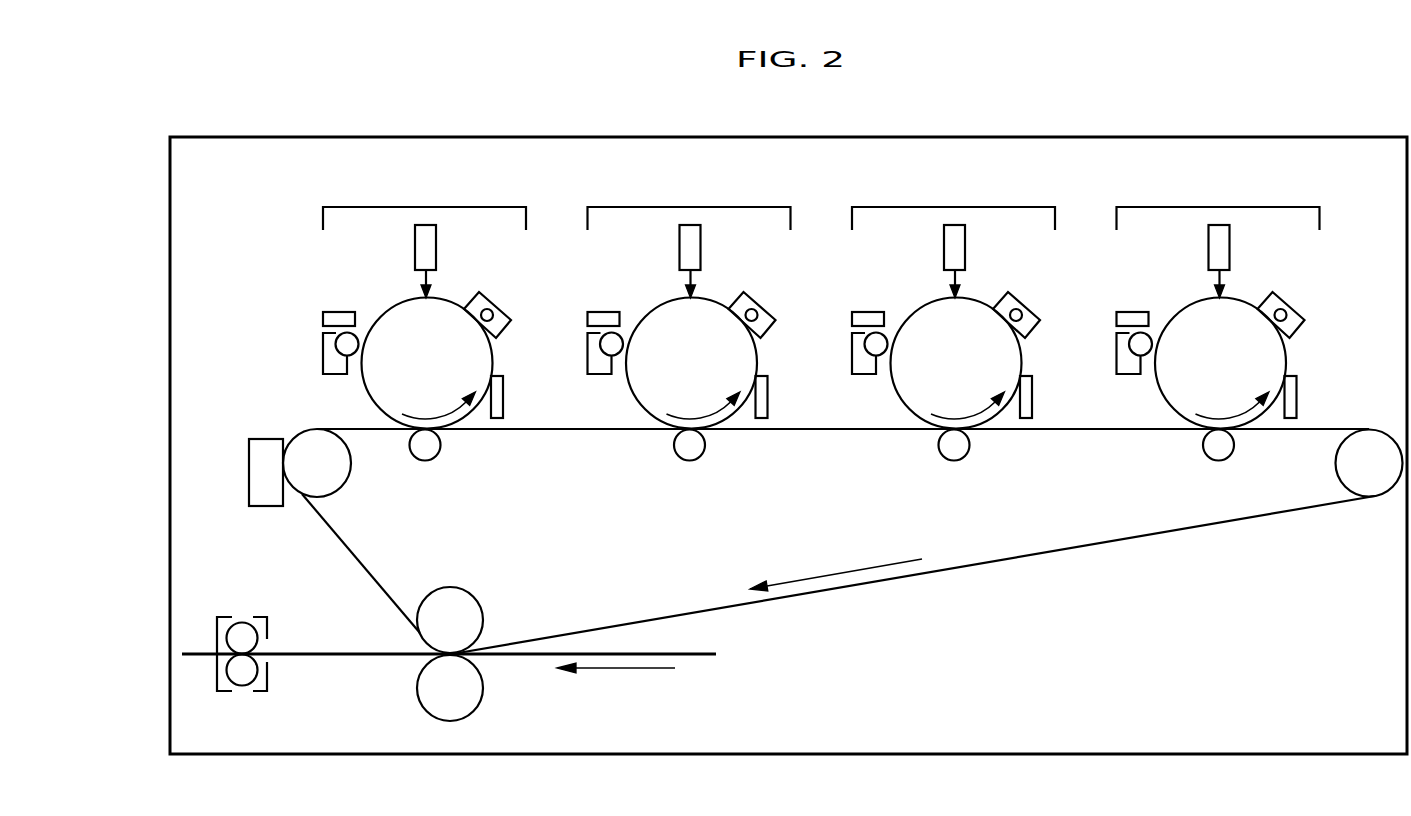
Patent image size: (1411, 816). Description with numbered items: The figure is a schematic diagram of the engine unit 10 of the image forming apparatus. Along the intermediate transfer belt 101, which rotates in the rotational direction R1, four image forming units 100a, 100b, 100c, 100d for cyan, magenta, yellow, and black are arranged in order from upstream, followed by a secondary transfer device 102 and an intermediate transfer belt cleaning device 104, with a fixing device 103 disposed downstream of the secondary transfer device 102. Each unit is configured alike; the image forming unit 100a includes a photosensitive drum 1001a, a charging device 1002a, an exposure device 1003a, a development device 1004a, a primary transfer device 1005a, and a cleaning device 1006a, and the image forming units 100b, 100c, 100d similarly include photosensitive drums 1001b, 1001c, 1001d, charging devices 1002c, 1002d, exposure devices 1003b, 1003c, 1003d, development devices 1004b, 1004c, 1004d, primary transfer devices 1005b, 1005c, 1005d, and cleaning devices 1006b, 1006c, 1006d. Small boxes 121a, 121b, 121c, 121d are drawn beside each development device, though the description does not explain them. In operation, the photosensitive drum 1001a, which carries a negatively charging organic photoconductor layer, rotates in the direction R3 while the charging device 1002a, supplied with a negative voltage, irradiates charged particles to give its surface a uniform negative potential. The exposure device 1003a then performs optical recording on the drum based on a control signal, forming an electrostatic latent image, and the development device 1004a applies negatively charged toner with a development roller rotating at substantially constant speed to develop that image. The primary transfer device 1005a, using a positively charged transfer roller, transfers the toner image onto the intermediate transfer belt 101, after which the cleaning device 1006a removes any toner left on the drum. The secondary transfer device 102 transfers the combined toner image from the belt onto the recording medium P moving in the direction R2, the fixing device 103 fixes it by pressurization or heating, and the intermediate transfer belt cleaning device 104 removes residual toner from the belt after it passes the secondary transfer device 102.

The engine unit 10 is at (211, 136).
The image forming unit 100a is at (420, 206).
The image forming unit 100b is at (663, 337).
The image forming unit 100c is at (927, 337).
The image forming unit 100d is at (1192, 337).
The photosensitive drum 1001a is at (368, 403).
The photosensitive drum 1001b is at (651, 363).
The photosensitive drum 1001c is at (915, 363).
The photosensitive drum 1001d is at (1180, 363).
The charging device 1002a is at (510, 283).
The charging device 1002c is at (1032, 298).
The charging device 1002d is at (1297, 298).
The exposure device 1003a is at (413, 254).
The exposure device 1003b is at (647, 261).
The exposure device 1003c is at (911, 261).
The exposure device 1003d is at (1176, 261).
The development device 1004a is at (322, 364).
The development device 1004b is at (571, 351).
The development device 1004c is at (835, 351).
The development device 1004d is at (1100, 351).
The primary transfer device 1005a is at (425, 462).
The primary transfer device 1005b is at (695, 471).
The primary transfer device 1005c is at (959, 471).
The primary transfer device 1005d is at (1224, 471).
The cleaning device 1006a is at (498, 421).
The cleaning device 1006b is at (767, 423).
The cleaning device 1006c is at (1031, 423).
The cleaning device 1006d is at (1296, 423).
The toner container 121a is at (322, 320).
The toner container 121b is at (575, 309).
The toner container 121c is at (839, 309).
The toner container 121d is at (1104, 309).
The intermediate transfer belt 101 is at (1058, 552).
The secondary transfer device 102 is at (415, 686).
The fixing device 103 is at (269, 627).
The intermediate transfer belt cleaning device 104 is at (247, 472).
The rotational direction of the intermediate transfer belt R1 is at (833, 573).
The moving direction of the recording medium R2 is at (620, 671).
The rotational direction of the photosensitive drum R3 is at (422, 417).
The recording medium P is at (703, 657).